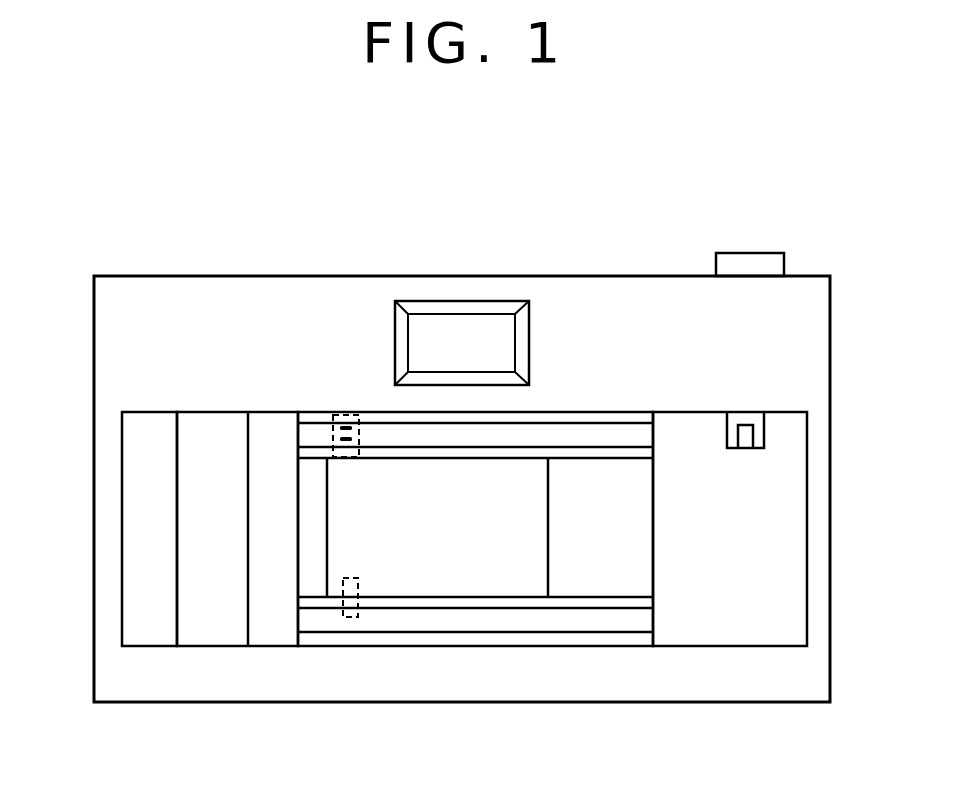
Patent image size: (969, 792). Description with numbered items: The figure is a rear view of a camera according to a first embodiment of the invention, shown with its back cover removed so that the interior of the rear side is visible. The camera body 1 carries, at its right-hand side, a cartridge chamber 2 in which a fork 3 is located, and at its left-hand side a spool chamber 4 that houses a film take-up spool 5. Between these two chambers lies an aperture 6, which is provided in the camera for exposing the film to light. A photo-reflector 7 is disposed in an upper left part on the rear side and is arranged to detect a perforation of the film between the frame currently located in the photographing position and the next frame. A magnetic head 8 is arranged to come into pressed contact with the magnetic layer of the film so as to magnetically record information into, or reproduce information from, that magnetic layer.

The camera body 1 is at (649, 300).
The cartridge chamber 2 is at (770, 594).
The fork 3 is at (764, 435).
The spool chamber 4 is at (135, 568).
The film take-up spool 5 is at (208, 636).
The aperture 6 is at (517, 590).
The photo-reflector 7 is at (345, 415).
The magnetic head 8 is at (356, 617).